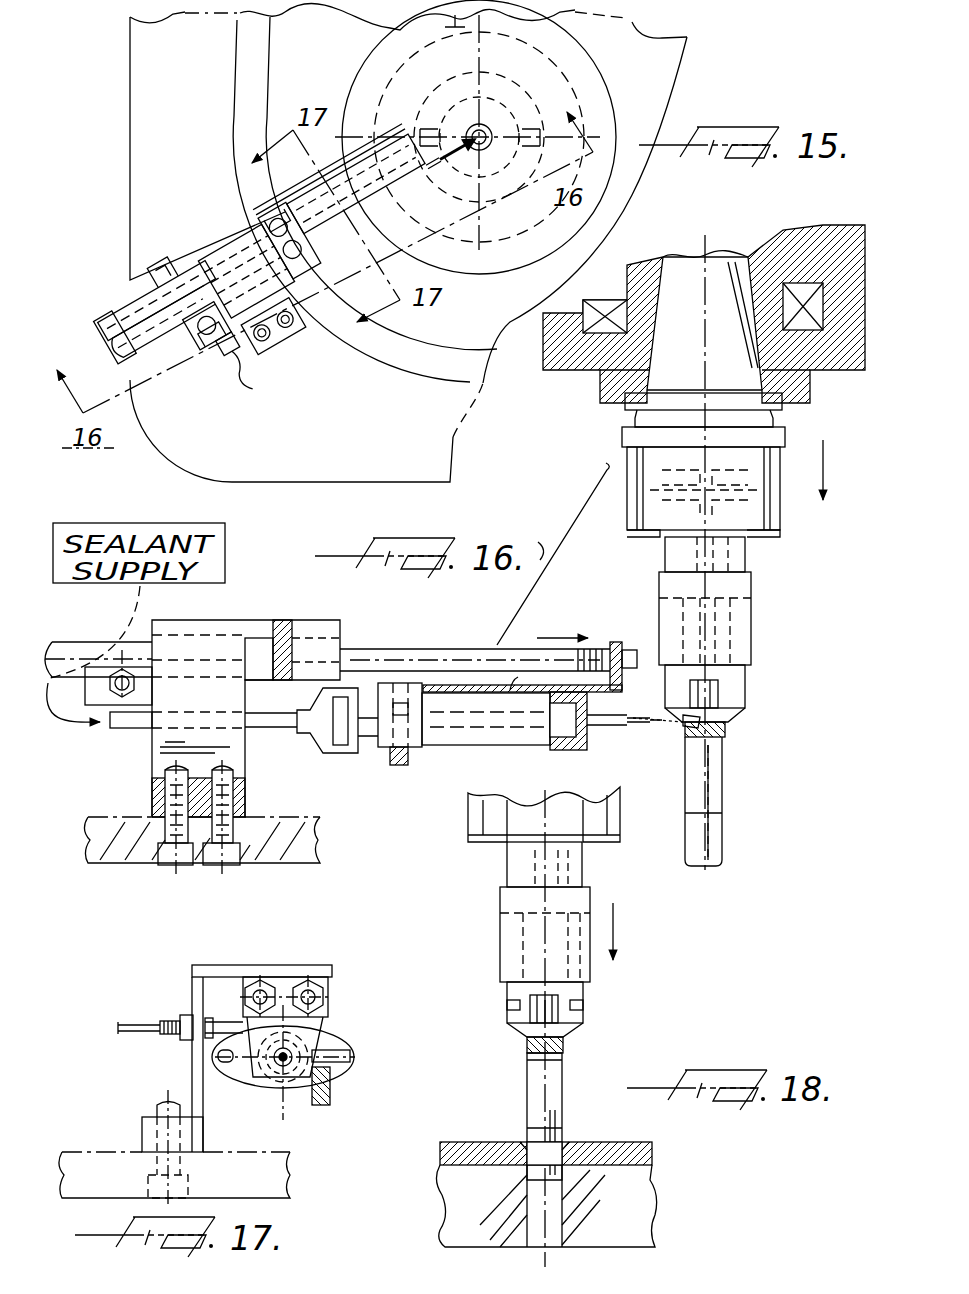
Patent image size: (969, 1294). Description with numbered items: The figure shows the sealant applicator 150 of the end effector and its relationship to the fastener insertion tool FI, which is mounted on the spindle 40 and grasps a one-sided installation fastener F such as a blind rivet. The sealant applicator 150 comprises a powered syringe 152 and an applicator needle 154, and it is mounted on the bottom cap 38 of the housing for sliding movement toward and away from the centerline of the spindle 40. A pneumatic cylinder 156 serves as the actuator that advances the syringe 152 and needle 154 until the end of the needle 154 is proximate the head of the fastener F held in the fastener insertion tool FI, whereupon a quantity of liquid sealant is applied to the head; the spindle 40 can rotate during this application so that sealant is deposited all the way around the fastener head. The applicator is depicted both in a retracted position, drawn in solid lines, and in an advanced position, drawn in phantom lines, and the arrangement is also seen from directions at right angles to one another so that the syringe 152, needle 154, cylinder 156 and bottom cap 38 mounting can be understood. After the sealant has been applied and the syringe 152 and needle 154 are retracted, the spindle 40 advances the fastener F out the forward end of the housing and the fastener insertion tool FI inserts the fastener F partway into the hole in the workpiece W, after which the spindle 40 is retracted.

In FIG. 15, the spindle 40 is at (590, 62).
In FIG. 16, the spindle 40 is at (577, 378).
In FIG. 15, the sealant applicator 150 is at (262, 215).
In FIG. 16, the sealant applicator 150 is at (353, 690).
In FIG. 17, the sealant applicator 150 is at (350, 990).
In FIG. 16, the powered syringe 152 is at (460, 740).
In FIG. 16, the applicator needle 154 is at (660, 722).
In FIG. 16, the pneumatic cylinder 156 is at (92, 650).
In FIG. 16, the bottom cap 38 is at (135, 845).
In FIG. 17, the bottom cap 38 is at (100, 1170).
In FIG. 16, the fastener F is at (713, 766).
In FIG. 18, the fastener F is at (527, 1093).
In FIG. 16, the fastener insertion tool FI is at (770, 537).
In FIG. 18, the fastener insertion tool FI is at (497, 905).
In FIG. 18, the workpiece W is at (455, 1188).